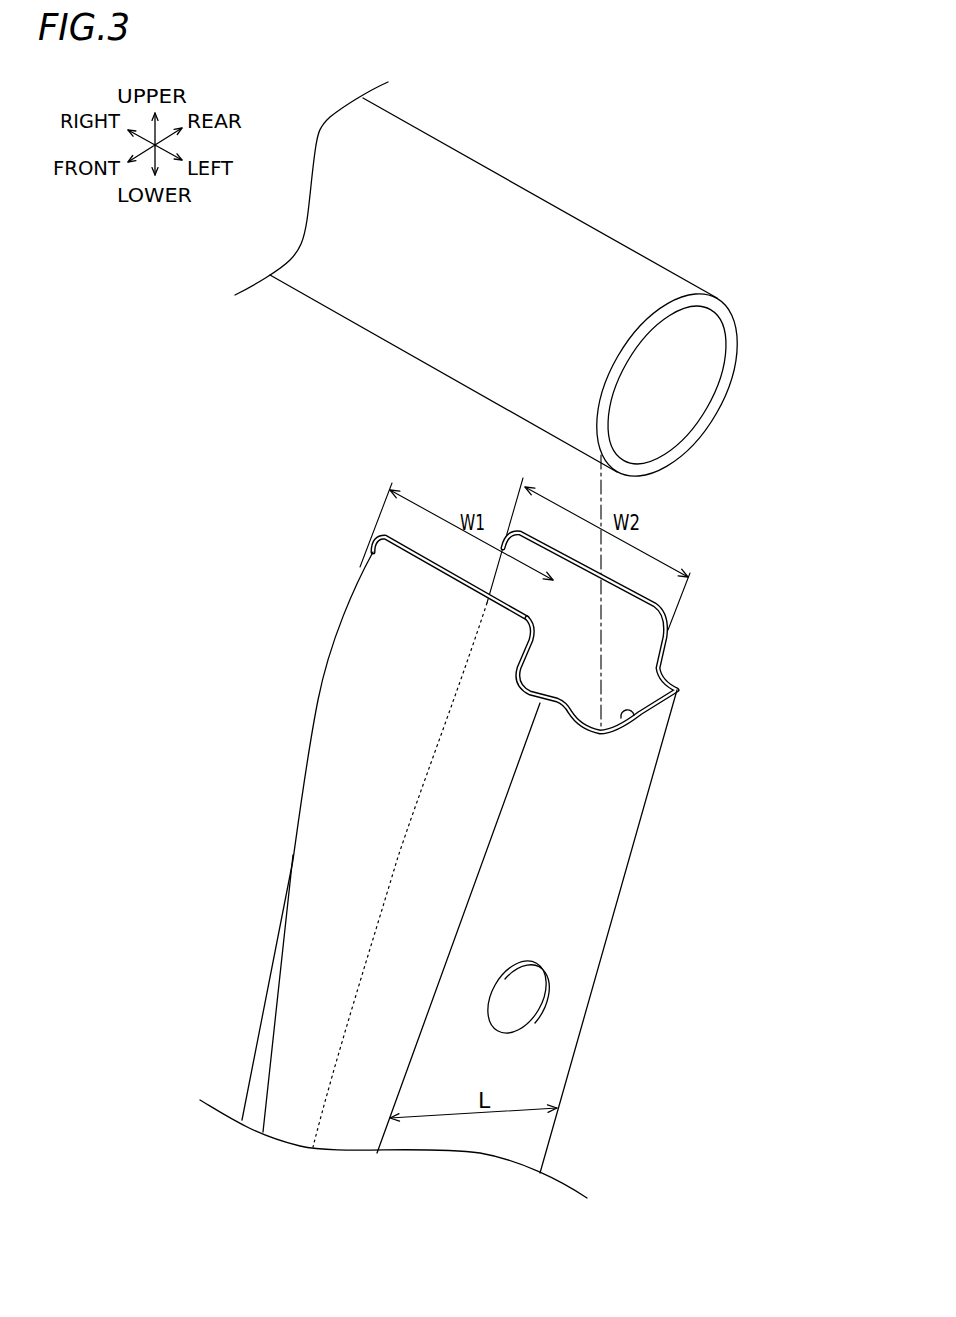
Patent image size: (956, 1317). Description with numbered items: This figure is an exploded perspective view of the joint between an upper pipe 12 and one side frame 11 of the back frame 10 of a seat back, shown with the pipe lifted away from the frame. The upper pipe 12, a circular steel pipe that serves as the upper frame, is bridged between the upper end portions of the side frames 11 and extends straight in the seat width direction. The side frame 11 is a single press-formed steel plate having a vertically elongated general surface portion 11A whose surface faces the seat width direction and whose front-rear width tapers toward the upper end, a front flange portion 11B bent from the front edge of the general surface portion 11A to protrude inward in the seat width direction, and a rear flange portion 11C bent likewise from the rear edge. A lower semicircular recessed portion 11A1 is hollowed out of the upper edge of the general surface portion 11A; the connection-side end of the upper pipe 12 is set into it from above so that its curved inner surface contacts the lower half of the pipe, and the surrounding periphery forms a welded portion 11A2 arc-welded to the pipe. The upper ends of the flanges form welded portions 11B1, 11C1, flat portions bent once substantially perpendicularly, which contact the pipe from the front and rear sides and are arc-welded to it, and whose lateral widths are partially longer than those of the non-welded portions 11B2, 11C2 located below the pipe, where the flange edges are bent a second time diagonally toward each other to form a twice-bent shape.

The back frame 10 is at (611, 178).
The upper pipe 12 is at (507, 203).
The side frame 11 is at (605, 953).
The general surface portion 11A is at (535, 1067).
The recessed portion 11A1 is at (640, 713).
The welded portion 11A2 is at (627, 714).
The front flange portion 11B is at (322, 983).
The welded portion 11B1 is at (443, 595).
The non-welded portion 11B2 is at (317, 1067).
The rear flange portion 11C is at (472, 777).
The welded portion 11C1 is at (627, 622).
The non-welded portion 11C2 is at (465, 833).